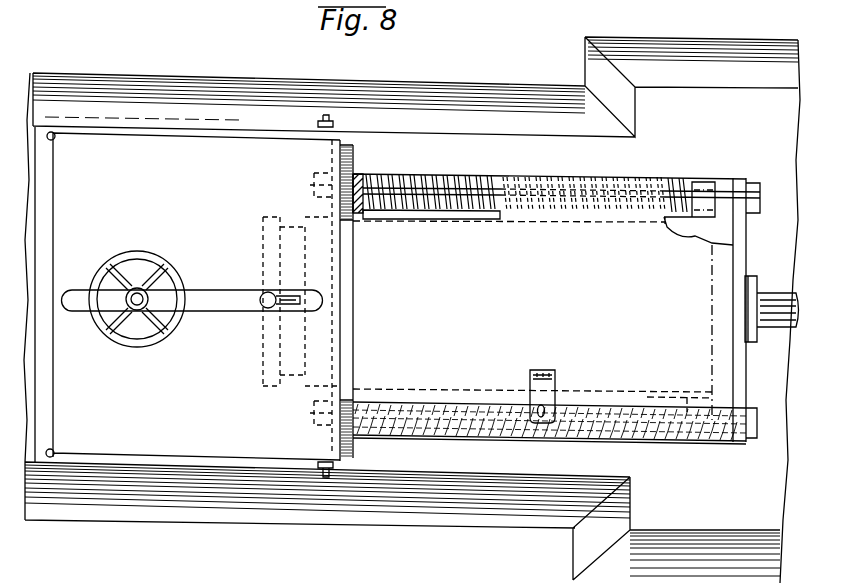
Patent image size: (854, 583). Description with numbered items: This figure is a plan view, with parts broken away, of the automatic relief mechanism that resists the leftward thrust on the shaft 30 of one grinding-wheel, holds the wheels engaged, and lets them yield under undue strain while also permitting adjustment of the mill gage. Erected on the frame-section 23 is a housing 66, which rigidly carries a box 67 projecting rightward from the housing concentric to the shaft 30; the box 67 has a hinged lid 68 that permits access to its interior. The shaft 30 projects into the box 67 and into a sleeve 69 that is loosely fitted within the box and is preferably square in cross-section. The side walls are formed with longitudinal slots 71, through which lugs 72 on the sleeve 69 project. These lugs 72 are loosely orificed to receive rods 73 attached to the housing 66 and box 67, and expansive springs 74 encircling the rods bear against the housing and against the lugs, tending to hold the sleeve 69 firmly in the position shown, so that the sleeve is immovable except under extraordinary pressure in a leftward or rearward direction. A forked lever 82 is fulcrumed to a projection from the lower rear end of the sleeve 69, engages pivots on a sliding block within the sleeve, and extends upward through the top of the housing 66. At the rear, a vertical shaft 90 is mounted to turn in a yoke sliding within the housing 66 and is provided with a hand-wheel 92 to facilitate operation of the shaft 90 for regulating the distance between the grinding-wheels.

The frame-section 23 is at (705, 534).
The shaft 30 is at (778, 312).
The housing 66 is at (194, 294).
The box 67 is at (387, 177).
The hinged lid 68 is at (533, 320).
The sleeve 69 is at (692, 234).
The longitudinal slots 71 is at (441, 220).
The lugs 72 is at (703, 188).
The rods 73 is at (434, 178).
The expansive springs 74 is at (470, 178).
The forked lever 82 is at (266, 303).
The vertical shaft 90 is at (140, 306).
The hand-wheel 92 is at (182, 280).